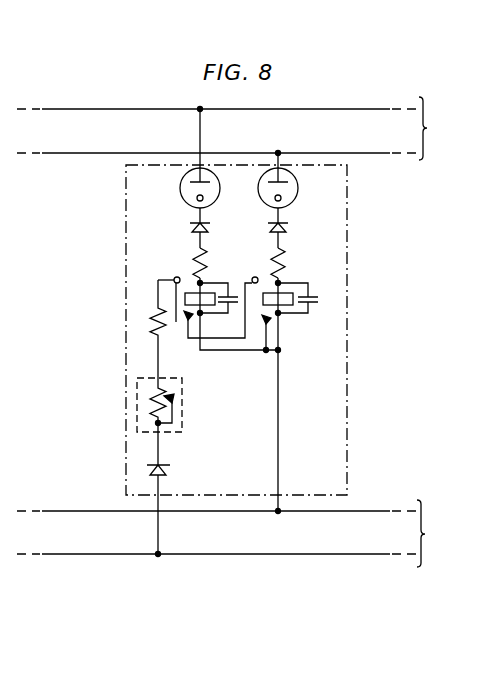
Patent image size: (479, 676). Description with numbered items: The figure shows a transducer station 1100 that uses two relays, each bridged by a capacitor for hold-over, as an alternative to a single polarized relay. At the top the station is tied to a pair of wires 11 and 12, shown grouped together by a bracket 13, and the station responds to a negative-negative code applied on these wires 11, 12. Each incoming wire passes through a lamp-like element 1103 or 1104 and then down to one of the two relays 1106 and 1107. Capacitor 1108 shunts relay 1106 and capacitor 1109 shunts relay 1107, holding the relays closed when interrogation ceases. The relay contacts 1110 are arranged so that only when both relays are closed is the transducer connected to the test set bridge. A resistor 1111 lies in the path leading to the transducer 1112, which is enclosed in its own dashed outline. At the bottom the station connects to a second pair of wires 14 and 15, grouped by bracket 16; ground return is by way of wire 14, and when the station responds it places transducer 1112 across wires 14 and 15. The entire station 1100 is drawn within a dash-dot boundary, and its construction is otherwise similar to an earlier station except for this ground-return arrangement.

The wire 11 is at (97, 109).
The wire 12 is at (97, 153).
The supply line pair 13 is at (436, 128).
The wire 14 is at (97, 511).
The wire 15 is at (97, 554).
The return line pair 16 is at (433, 533).
The station 1100 is at (347, 405).
The lamp 1103 is at (182, 183).
The lamp 1104 is at (263, 195).
The relay 1106 is at (192, 292).
The relay 1107 is at (286, 298).
The capacitor 1108 is at (233, 296).
The capacitor 1109 is at (320, 305).
The relay contact 1110 is at (258, 320).
The resistor 1111 is at (182, 323).
The transducer 1112 is at (182, 397).